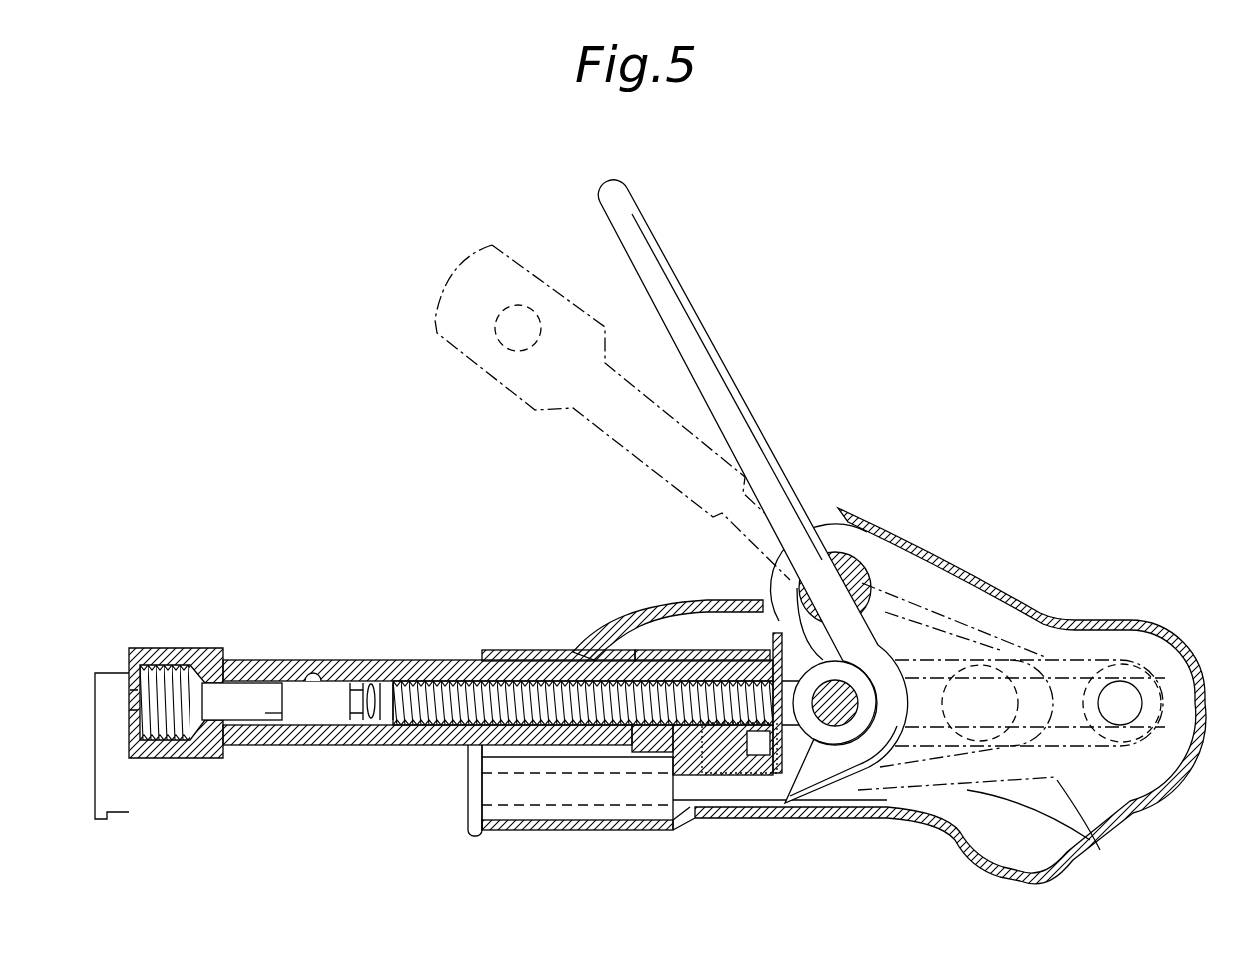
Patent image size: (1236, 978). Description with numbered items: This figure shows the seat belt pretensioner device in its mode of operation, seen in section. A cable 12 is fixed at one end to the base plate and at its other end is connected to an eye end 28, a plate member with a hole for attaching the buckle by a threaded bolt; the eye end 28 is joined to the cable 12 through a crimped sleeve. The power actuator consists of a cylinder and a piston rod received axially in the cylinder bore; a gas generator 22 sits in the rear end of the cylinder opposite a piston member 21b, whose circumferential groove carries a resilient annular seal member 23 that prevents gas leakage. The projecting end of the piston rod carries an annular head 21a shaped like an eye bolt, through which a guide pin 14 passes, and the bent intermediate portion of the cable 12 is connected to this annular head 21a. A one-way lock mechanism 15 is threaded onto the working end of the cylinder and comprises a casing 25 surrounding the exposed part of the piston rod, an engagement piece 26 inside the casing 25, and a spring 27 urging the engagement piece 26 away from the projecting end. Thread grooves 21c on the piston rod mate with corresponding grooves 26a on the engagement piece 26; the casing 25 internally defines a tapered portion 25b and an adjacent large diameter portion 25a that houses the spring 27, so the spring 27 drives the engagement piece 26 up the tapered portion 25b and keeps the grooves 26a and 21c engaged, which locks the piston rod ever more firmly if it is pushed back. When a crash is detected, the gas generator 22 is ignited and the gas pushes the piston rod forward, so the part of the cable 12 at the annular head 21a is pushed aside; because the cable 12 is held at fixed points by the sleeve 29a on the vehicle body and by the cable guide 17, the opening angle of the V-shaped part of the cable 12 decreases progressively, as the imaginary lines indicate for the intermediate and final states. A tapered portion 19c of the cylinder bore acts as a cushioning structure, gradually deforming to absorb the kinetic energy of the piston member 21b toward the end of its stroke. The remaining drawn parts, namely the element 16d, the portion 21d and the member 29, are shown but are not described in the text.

The cable 12 is at (710, 335).
The guide pin 14 is at (797, 618).
The one-way lock mechanism 15 is at (645, 638).
The bracket arm portion 16d is at (888, 803).
The cable guide 17 is at (856, 552).
The tapered portion 19c is at (357, 645).
The annular head 21a is at (890, 620).
The piston member 21b is at (383, 682).
The thread grooves of piston rod 21c is at (413, 730).
The shaft portion of push rod 21d is at (373, 683).
The gas generator 22 is at (257, 682).
The seal member 23 is at (367, 743).
The casing 25 is at (664, 650).
The large diameter portion 25a is at (790, 748).
The tapered portion 25b is at (705, 760).
The engagement piece 26 is at (742, 773).
The thread grooves of engagement piece 26a is at (708, 650).
The spring 27 is at (760, 775).
The eye end 28 is at (470, 360).
The housing 29 is at (577, 820).
The sleeve 29a is at (476, 835).